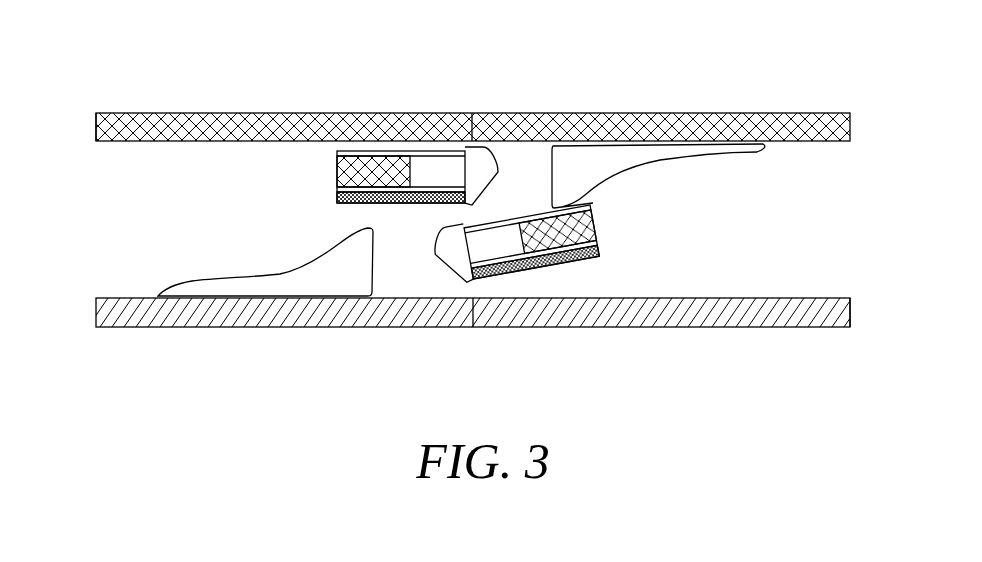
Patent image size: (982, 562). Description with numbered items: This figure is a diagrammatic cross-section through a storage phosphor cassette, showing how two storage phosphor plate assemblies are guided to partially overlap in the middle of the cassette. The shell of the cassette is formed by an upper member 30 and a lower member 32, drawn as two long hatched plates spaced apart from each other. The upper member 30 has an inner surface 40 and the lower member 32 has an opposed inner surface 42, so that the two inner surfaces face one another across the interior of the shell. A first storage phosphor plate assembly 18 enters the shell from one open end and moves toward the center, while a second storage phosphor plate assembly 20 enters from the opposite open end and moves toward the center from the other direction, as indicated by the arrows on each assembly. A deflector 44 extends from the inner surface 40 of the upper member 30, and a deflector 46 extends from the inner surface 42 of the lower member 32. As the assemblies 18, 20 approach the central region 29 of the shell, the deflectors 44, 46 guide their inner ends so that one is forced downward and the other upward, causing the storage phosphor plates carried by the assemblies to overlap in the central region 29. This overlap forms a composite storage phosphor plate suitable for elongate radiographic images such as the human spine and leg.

The first storage phosphor plate assembly 18 is at (300, 174).
The second storage phosphor plate assembly 20 is at (630, 221).
The central region 29 is at (526, 86).
The upper member 30 is at (278, 112).
The lower member 32 is at (440, 327).
The inner surface 40 is at (148, 143).
The inner surface 42 is at (787, 297).
The deflector 44 is at (760, 151).
The deflector 46 is at (227, 278).